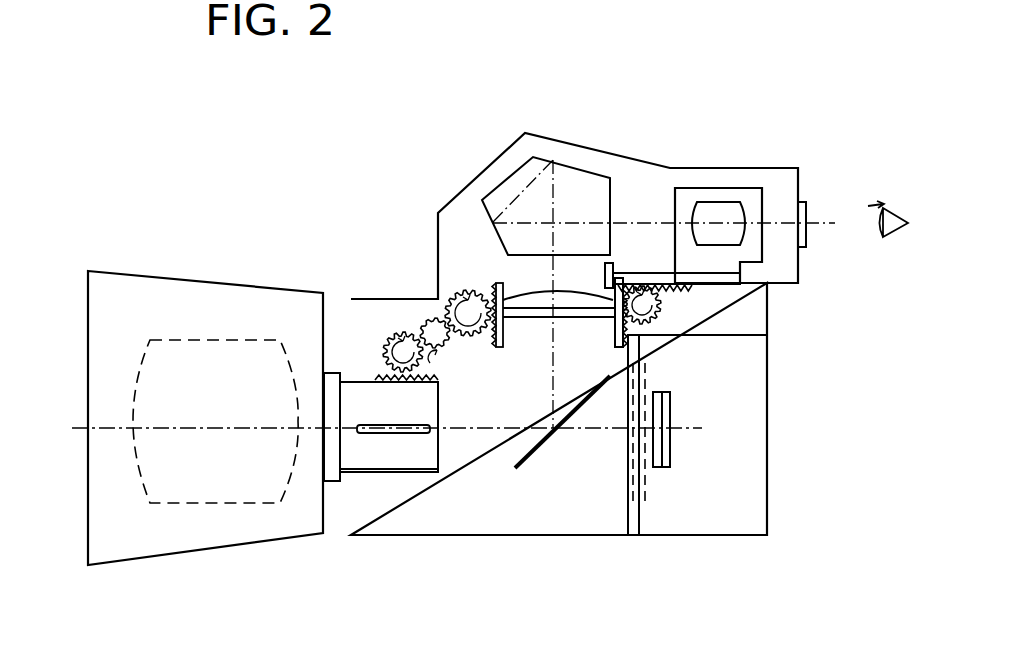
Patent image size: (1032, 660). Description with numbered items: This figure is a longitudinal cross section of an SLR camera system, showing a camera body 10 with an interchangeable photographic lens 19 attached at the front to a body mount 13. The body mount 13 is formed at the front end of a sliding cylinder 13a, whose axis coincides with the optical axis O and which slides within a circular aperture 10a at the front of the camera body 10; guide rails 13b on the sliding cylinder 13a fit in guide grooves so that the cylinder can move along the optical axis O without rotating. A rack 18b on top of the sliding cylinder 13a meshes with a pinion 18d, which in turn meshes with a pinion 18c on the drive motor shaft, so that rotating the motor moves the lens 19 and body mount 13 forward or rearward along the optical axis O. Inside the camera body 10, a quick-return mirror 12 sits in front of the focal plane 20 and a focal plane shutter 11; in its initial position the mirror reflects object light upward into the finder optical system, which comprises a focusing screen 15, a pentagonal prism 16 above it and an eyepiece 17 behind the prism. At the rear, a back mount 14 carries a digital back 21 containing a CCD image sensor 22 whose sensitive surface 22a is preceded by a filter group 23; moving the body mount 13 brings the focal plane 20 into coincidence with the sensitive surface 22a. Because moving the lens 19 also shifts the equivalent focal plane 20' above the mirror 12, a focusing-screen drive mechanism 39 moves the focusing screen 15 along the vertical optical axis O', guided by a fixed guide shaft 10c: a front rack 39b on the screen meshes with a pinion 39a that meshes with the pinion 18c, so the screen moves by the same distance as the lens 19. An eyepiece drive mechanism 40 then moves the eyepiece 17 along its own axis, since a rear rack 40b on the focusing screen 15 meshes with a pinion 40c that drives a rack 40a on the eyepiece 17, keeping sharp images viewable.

The camera body 10 is at (556, 535).
The circular aperture 10a is at (441, 458).
The guide shaft 10c is at (605, 274).
The focal plane shutter 11 is at (632, 447).
The quick-return mirror 12 is at (527, 467).
The body mount 13 is at (323, 478).
The sliding cylinder 13a is at (408, 458).
The guide rail 13b is at (388, 438).
The back mount 14 is at (640, 345).
The focusing screen 15 is at (570, 312).
The pentagonal prism 16 is at (545, 158).
The eyepiece 17 is at (730, 207).
The rack 18b is at (368, 373).
The pinion 18c is at (427, 327).
The pinion 18d is at (395, 332).
The interchangeable photographic lens 19 is at (199, 548).
The focal plane 20 is at (630, 433).
The equivalent focal plane 20' is at (559, 341).
The digital back 21 is at (757, 445).
The CCD image sensor 22 is at (667, 410).
The sensitive surface 22a is at (651, 447).
The filter group 23 is at (662, 452).
The focusing-screen drive mechanism 39 is at (430, 137).
The pinion 39a is at (467, 305).
The front rack 39b is at (497, 280).
The eyepiece drive mechanism 40 is at (855, 262).
The rack 40a is at (735, 293).
The rear rack 40b is at (663, 293).
The pinion 40c is at (655, 325).
The optical axis O is at (381, 477).
The optical axis O' is at (526, 389).